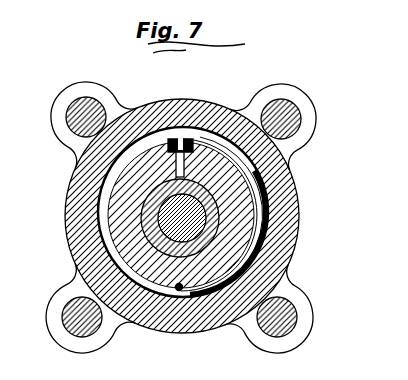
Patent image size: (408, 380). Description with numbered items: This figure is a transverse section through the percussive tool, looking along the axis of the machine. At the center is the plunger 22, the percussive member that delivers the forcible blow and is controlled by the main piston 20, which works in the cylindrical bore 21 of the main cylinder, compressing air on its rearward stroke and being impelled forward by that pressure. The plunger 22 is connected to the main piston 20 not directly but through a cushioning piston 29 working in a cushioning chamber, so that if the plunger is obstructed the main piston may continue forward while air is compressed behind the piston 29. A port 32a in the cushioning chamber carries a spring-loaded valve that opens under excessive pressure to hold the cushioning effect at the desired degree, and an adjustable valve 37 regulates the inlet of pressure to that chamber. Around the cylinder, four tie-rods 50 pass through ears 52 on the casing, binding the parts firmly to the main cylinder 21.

The main piston 20 is at (264, 182).
The cylindrical bore 21 is at (275, 263).
The plunger 22 is at (186, 228).
The cushioning piston 29 is at (213, 208).
The port 32a is at (188, 138).
The adjustable valve 37 is at (180, 291).
The tie-rods 50 is at (70, 108).
The ears 52 is at (103, 82).